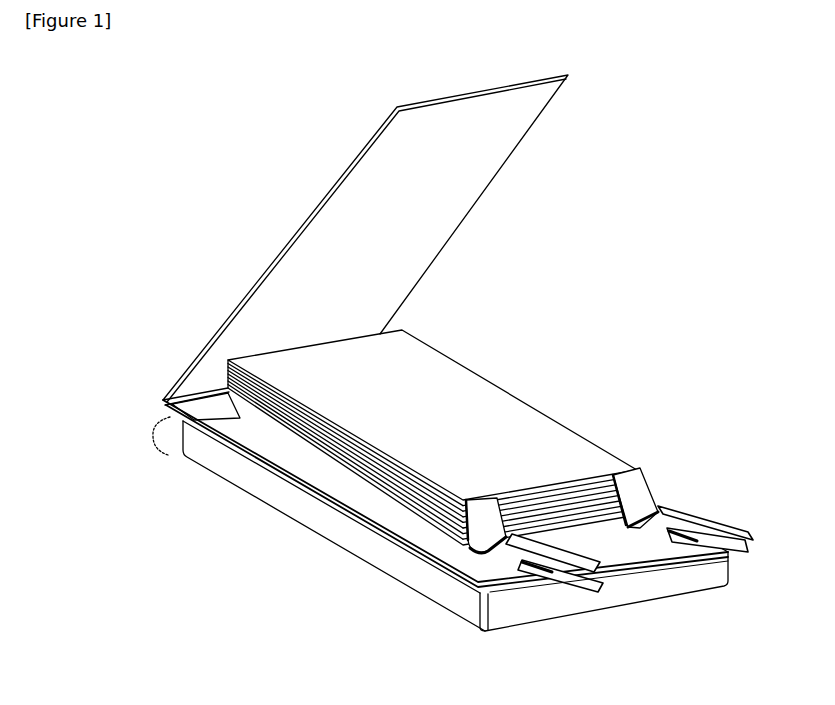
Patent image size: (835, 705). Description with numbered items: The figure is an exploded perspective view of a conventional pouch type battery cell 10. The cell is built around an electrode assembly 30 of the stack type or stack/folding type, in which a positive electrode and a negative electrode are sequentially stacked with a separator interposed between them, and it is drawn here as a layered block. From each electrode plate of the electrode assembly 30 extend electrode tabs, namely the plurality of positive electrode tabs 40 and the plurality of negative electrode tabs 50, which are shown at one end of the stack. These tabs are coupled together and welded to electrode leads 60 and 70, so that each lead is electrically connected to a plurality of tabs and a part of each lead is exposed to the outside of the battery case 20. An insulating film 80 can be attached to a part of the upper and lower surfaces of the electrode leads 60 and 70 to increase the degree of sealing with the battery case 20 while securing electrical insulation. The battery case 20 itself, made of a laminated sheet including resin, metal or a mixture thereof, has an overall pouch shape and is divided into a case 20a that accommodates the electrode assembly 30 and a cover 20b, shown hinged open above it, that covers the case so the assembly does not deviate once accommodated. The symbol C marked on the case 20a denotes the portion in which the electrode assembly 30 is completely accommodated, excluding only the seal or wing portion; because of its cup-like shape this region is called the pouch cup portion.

The pouch type battery cell 10 is at (125, 106).
The battery case 20 is at (151, 396).
The case 20a is at (262, 503).
The cover 20b is at (228, 318).
The pouch cup portion C is at (150, 436).
The electrode assembly 30 is at (521, 372).
The positive electrode tab 40 is at (462, 540).
The negative electrode tab 50 is at (655, 490).
The electrode lead 60 is at (505, 570).
The electrode lead 70 is at (703, 513).
The insulating film 80 is at (540, 580).